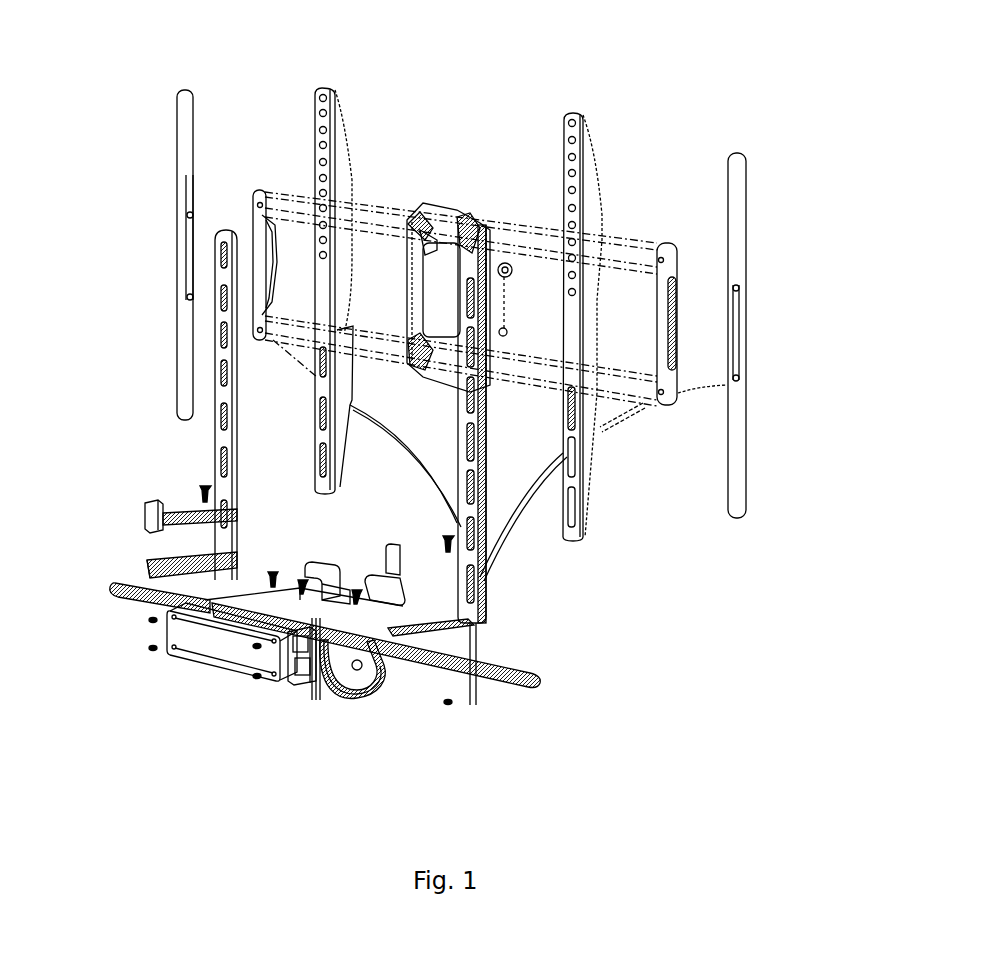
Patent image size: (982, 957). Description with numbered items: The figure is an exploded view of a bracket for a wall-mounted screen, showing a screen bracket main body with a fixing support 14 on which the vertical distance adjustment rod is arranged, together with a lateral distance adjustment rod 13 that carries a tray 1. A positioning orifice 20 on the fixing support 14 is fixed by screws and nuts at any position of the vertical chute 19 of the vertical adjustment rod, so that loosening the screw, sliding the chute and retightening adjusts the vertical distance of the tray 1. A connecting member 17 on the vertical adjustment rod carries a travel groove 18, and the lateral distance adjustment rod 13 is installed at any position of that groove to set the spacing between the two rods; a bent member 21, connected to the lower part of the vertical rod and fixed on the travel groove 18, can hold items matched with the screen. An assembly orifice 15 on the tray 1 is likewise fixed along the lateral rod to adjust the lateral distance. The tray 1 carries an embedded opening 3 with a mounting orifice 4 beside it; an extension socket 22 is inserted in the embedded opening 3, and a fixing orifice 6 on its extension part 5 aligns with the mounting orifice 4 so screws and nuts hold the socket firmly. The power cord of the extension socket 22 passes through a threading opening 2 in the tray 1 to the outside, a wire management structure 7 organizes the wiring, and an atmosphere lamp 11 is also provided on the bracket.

The tray 1 is at (383, 672).
The threading opening 2 is at (320, 663).
The embedded opening 3 is at (260, 673).
The mounting orifice 4 is at (307, 670).
The extension part 5 is at (223, 647).
The fixing orifice 6 is at (163, 652).
The wire management structure 7 is at (305, 572).
The atmosphere lamp 11 is at (735, 305).
The lateral distance adjustment rod 13 is at (470, 650).
The fixing support 14 is at (435, 280).
The assembly orifice 15 is at (410, 605).
The connecting member 17 is at (443, 667).
The travel groove 18 is at (175, 560).
The vertical chute 19 is at (215, 390).
The positioning orifice 20 is at (573, 190).
The bent member 21 is at (150, 505).
The extension socket 22 is at (140, 580).